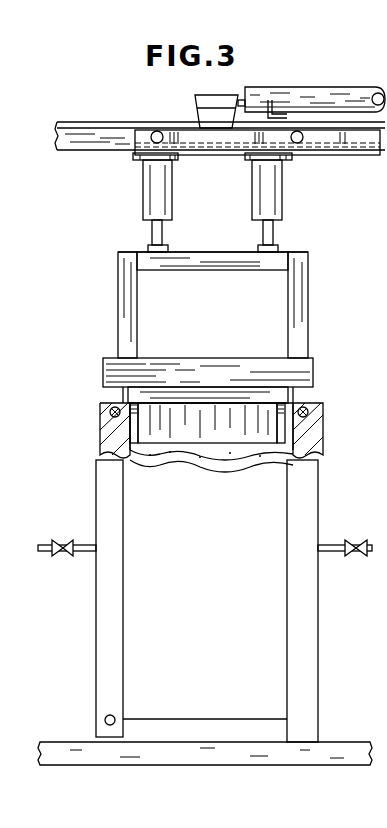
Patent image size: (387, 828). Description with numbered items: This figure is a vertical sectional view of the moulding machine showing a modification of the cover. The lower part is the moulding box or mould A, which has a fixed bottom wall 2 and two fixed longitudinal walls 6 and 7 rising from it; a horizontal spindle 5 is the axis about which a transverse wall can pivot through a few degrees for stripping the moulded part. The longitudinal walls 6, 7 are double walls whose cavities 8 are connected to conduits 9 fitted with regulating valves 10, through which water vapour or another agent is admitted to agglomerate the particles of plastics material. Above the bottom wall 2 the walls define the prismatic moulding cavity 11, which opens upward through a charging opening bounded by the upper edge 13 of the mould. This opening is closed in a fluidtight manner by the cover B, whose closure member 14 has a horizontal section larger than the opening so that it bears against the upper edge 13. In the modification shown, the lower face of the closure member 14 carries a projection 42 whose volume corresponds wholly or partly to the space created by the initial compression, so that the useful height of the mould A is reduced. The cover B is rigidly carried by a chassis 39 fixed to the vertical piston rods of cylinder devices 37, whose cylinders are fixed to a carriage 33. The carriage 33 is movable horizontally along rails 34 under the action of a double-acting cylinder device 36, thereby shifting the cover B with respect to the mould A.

The fixed bottom wall 2 is at (197, 730).
The horizontal spindle 5 is at (106, 718).
The fixed longitudinal wall 6 is at (113, 496).
The fixed longitudinal wall 7 is at (313, 521).
The cavities 8 is at (133, 442).
The conduits 9 is at (91, 551).
The regulating valves 10 is at (64, 558).
The moulding cavity 11 is at (166, 454).
The upper edge 13 is at (304, 404).
The closure member 14 is at (176, 389).
The carriage 33 is at (134, 140).
The rails 34 is at (95, 132).
The double-acting cylinder device 36 is at (328, 100).
The cylinder devices 37 is at (264, 186).
The chassis 39 is at (210, 253).
The projection 42 is at (204, 427).
The mould A is at (325, 640).
The cover B is at (118, 312).